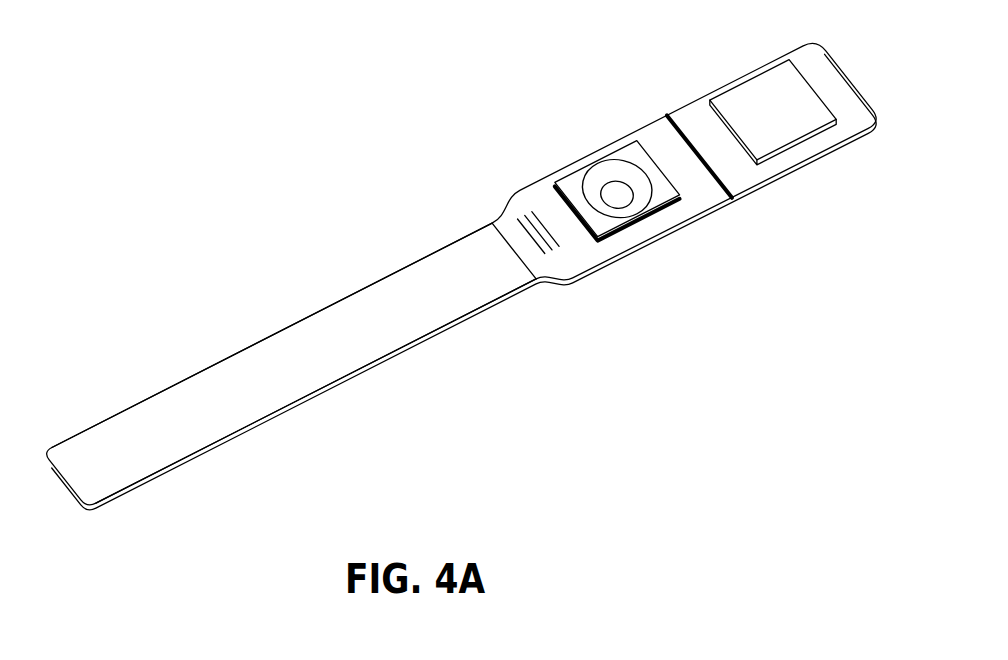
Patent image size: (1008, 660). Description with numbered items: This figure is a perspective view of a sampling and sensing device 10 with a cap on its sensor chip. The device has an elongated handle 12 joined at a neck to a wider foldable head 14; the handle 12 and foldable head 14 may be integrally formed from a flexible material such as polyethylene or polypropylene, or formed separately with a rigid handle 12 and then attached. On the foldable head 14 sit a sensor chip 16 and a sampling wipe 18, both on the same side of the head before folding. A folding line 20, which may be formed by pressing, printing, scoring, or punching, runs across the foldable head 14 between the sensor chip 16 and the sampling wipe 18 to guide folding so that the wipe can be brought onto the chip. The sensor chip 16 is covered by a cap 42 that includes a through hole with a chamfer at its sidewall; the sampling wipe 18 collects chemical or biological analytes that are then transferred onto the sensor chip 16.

The sampling and sensing device 10 is at (478, 368).
The handle 12 is at (345, 328).
The foldable head 14 is at (530, 205).
The sensor chip 16 is at (612, 195).
The sampling wipe 18 is at (748, 97).
The folding line 20 is at (722, 188).
The cap 42 is at (628, 150).